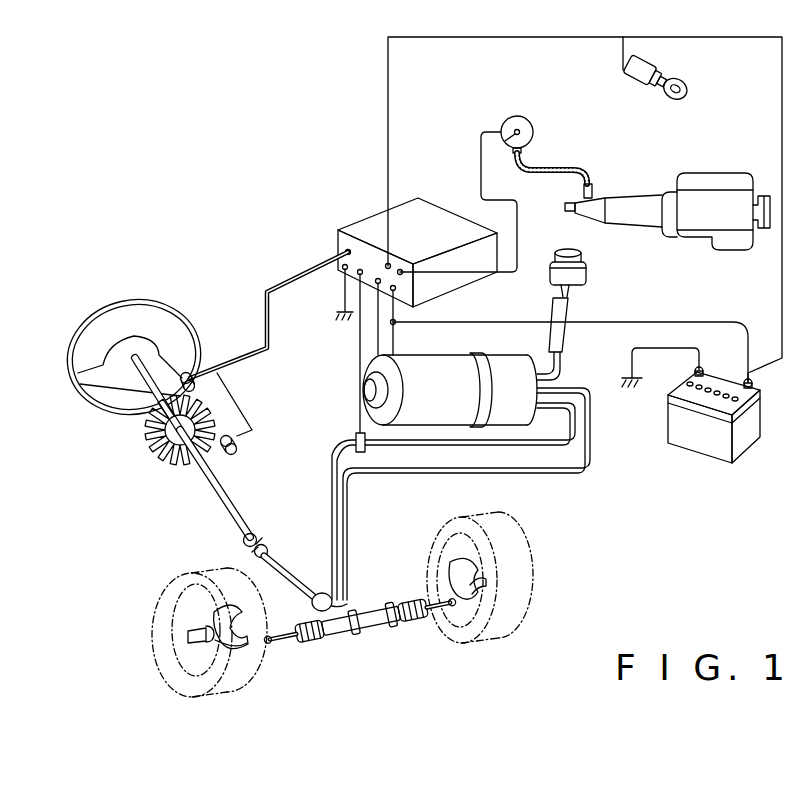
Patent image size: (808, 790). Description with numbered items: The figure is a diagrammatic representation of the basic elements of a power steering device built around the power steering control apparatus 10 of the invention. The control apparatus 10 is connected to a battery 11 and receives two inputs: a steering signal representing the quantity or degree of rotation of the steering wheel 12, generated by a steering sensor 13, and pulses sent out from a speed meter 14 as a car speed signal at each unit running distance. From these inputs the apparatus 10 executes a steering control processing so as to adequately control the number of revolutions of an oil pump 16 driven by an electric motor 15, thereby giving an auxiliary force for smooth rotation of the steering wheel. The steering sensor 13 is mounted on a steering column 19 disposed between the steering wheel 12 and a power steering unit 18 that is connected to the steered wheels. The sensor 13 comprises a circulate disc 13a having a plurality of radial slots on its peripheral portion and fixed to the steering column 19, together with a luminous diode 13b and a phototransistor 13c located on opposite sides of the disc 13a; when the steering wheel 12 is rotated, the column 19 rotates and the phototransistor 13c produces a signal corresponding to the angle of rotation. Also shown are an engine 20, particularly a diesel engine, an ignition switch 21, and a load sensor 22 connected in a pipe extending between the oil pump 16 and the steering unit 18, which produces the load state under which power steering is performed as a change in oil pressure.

The power steering control apparatus 10 is at (430, 203).
The battery 11 is at (694, 450).
The steering wheel 12 is at (180, 311).
The steering sensor 13 is at (175, 415).
The circulate disc 13a is at (157, 457).
The luminous diode 13b is at (195, 372).
The phototransistor 13c is at (234, 456).
The speed meter 14 is at (533, 132).
The electric motor 15 is at (448, 362).
The oil pump 16 is at (503, 360).
The power steering unit 18 is at (336, 647).
The steering column 19 is at (225, 500).
The engine 20 is at (725, 178).
The ignition switch 21 is at (640, 84).
The load sensor 22 is at (355, 436).